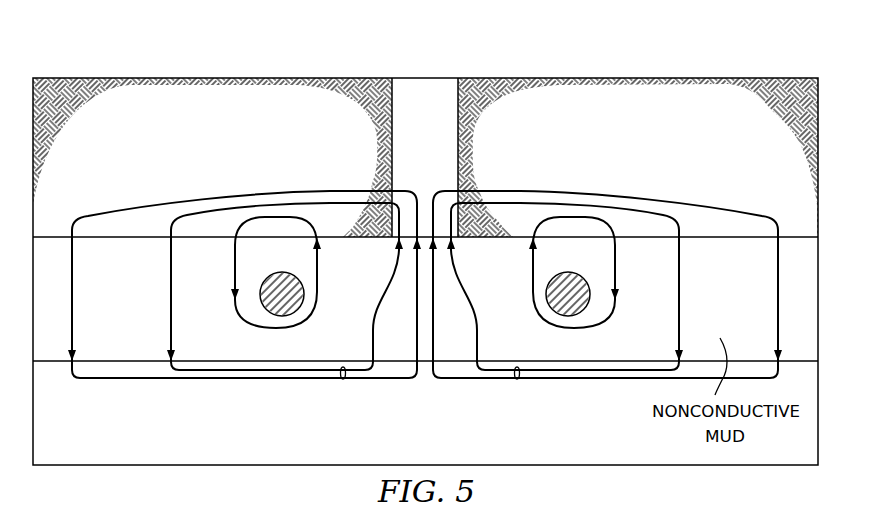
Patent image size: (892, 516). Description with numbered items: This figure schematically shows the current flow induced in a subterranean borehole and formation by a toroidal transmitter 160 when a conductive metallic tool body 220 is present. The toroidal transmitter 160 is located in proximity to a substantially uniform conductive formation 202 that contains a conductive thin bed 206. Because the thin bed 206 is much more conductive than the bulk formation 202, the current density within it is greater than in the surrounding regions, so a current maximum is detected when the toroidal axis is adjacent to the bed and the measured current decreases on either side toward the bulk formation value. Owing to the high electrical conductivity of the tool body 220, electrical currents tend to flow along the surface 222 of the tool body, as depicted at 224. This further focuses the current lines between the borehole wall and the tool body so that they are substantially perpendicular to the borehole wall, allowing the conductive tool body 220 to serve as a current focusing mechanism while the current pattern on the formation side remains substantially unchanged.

The formation 202 is at (220, 136).
The conductive thin bed 206 is at (433, 97).
The conductive tool body 220 is at (440, 422).
The surface of the tool body 222 is at (260, 363).
The toroidal transmitter 160 is at (303, 285).
The current flow along the tool body surface 224 is at (343, 382).